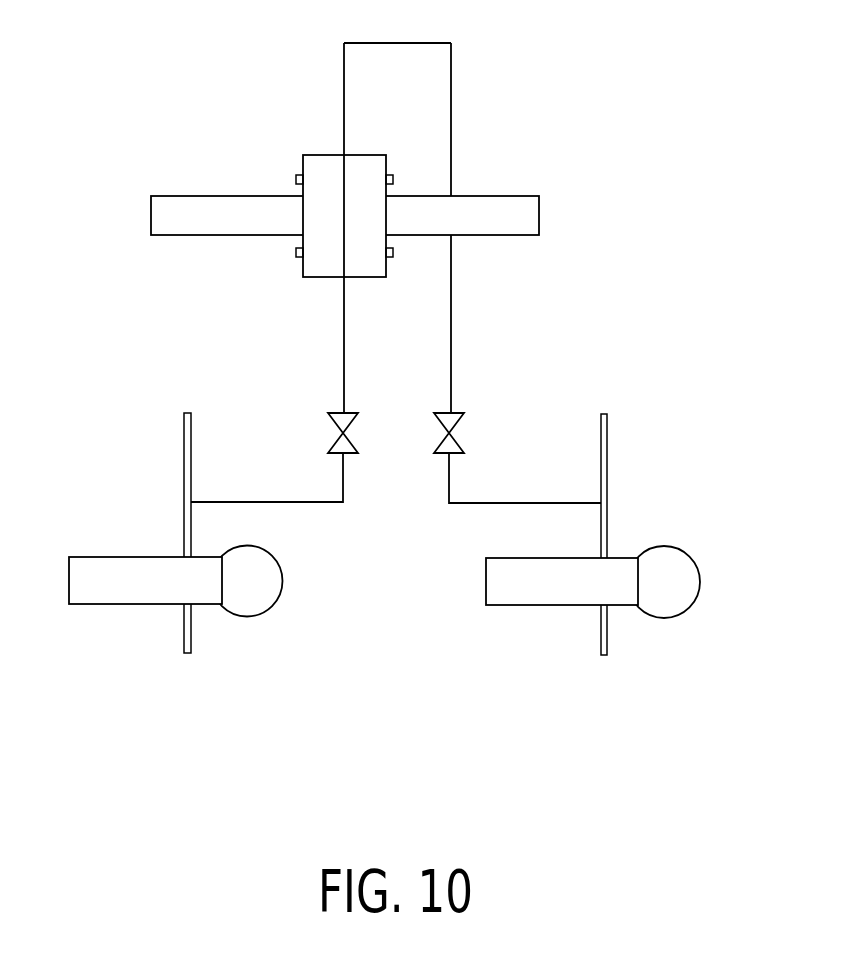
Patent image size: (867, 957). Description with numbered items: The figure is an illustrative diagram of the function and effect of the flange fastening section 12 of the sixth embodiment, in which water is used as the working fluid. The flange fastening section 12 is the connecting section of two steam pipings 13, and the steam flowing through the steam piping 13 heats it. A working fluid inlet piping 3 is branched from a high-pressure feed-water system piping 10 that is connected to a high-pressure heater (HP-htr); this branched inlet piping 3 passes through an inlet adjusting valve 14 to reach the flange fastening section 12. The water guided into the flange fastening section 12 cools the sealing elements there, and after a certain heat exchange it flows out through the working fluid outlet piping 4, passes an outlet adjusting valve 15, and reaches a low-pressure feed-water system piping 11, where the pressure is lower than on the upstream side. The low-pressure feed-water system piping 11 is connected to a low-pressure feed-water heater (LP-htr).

The working fluid inlet piping 3 is at (344, 305).
The working fluid outlet piping 4 is at (452, 76).
The high-pressure feed-water system piping 10 is at (187, 653).
The low-pressure feed-water system piping 11 is at (604, 655).
The flange fastening section 12 is at (320, 155).
The steam piping 13 is at (503, 196).
The inlet adjusting valve 14 is at (343, 413).
The outlet adjusting valve 15 is at (450, 413).